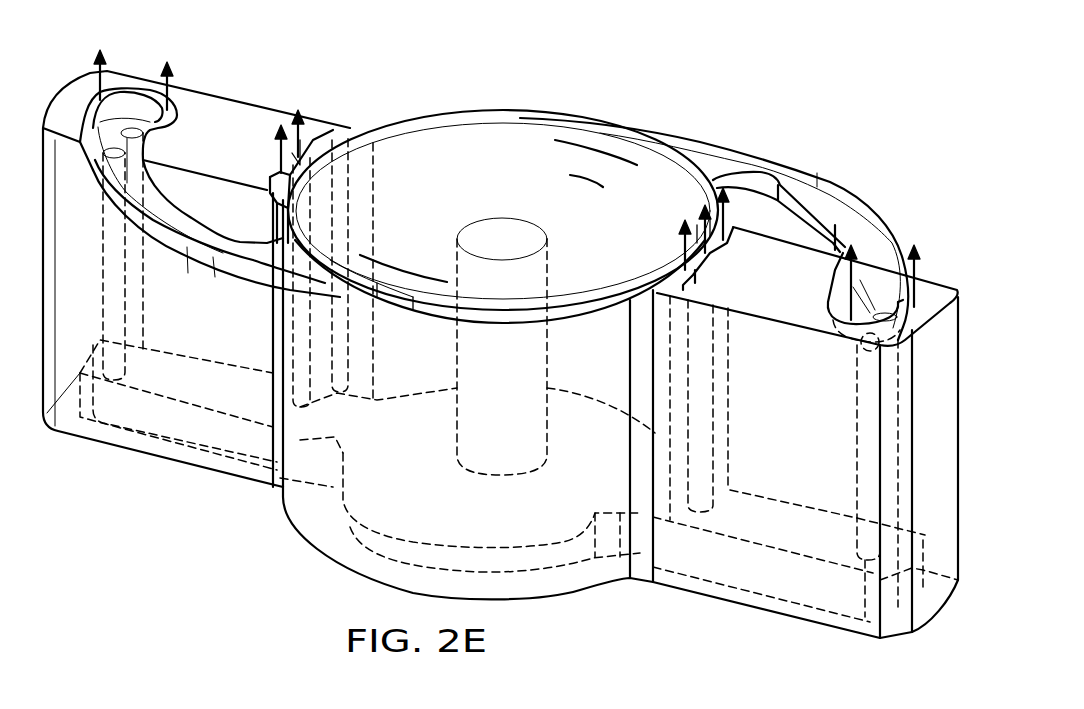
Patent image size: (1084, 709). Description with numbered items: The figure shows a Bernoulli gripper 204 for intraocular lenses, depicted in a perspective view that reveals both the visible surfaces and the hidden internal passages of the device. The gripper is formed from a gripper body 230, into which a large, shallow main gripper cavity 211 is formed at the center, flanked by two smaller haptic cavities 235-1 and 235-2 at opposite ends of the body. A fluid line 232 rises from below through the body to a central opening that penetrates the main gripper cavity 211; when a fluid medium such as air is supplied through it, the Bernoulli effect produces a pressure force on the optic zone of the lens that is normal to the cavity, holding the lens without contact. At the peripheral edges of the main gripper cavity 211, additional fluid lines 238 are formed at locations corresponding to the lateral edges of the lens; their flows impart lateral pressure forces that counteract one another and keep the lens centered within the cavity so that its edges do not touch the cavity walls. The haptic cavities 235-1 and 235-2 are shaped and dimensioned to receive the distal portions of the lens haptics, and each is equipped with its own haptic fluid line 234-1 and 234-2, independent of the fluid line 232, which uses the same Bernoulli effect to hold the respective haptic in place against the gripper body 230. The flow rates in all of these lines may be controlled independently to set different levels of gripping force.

The Bernoulli gripper 204 is at (728, 102).
The main gripper cavity 211 is at (422, 147).
The gripper body 230 is at (295, 537).
The fluid line 232 is at (548, 267).
The haptic fluid line 234-1 is at (147, 300).
The haptic fluid line 234-2 is at (857, 443).
The haptic cavity 235-1 is at (133, 90).
The haptic cavity 235-2 is at (840, 300).
The additional fluid lines 238 is at (315, 138).